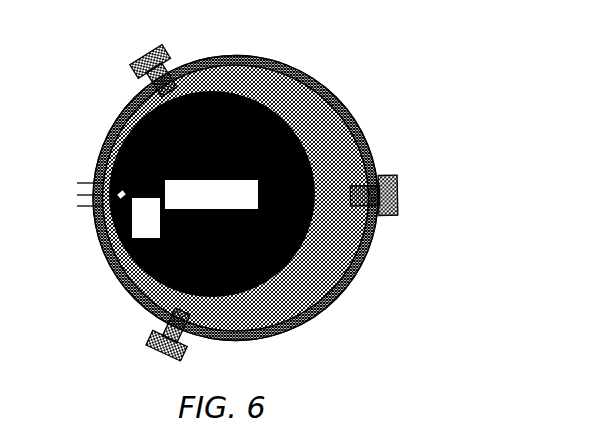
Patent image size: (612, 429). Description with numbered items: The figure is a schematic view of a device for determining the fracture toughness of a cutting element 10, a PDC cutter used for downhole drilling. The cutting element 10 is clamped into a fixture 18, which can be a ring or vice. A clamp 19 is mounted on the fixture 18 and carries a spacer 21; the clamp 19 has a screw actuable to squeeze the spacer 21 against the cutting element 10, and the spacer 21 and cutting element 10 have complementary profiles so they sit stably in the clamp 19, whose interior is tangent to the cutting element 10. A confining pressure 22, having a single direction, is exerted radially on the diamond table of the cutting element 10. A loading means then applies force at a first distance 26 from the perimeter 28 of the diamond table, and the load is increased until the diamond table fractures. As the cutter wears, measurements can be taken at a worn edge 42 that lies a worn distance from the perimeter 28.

The cutting element 10 is at (132, 102).
The fixture 18 is at (387, 190).
The clamp 19 is at (362, 268).
The spacer 21 is at (307, 110).
The confining pressure 22 is at (72, 193).
The first distance 26 is at (96, 155).
The perimeter 28 is at (118, 268).
The worn edge 42 is at (187, 209).